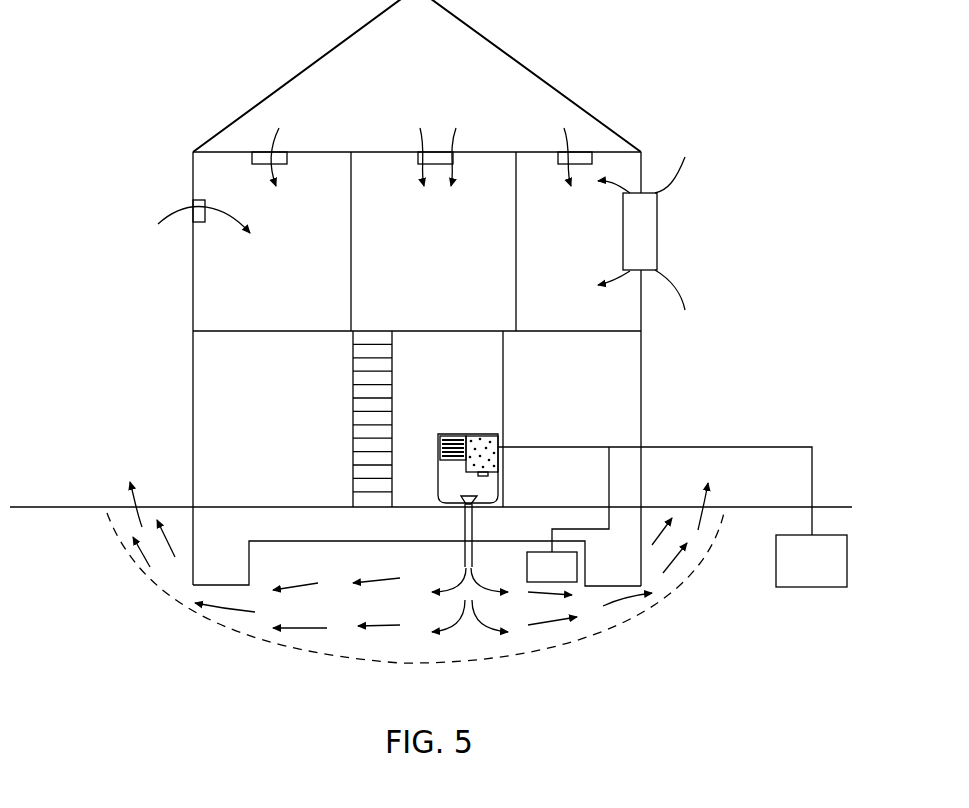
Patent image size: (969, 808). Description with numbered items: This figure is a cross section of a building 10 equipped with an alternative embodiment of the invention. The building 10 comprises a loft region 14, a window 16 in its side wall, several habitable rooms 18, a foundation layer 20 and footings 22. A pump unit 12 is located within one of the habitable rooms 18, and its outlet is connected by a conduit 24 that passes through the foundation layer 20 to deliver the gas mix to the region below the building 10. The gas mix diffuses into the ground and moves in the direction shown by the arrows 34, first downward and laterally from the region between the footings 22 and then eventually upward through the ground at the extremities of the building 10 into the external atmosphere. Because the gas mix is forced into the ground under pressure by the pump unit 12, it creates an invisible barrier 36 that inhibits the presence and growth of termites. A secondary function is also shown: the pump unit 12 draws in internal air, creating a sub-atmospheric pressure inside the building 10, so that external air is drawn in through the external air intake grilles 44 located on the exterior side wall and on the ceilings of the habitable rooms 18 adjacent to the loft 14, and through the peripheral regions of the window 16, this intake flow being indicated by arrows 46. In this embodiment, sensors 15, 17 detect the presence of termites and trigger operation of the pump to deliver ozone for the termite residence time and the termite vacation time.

The building 10 is at (178, 86).
The pump unit 12 is at (463, 430).
The loft region 14 is at (350, 63).
The sensor 15 is at (812, 589).
The window 16 is at (658, 228).
The sensor 17 is at (569, 582).
The habitable rooms 18 is at (290, 289).
The foundation layer 20 is at (281, 515).
The footings 22 is at (216, 570).
The conduit 24 is at (475, 528).
The arrows 34 is at (552, 623).
The invisible barrier 36 is at (277, 647).
The external air intake grilles 44 is at (432, 147).
The arrows 46 is at (573, 140).